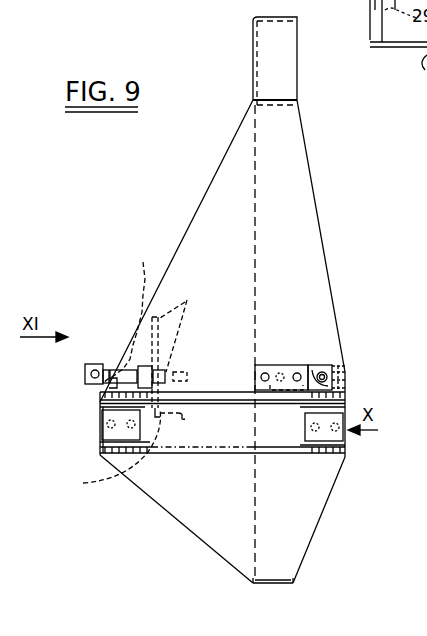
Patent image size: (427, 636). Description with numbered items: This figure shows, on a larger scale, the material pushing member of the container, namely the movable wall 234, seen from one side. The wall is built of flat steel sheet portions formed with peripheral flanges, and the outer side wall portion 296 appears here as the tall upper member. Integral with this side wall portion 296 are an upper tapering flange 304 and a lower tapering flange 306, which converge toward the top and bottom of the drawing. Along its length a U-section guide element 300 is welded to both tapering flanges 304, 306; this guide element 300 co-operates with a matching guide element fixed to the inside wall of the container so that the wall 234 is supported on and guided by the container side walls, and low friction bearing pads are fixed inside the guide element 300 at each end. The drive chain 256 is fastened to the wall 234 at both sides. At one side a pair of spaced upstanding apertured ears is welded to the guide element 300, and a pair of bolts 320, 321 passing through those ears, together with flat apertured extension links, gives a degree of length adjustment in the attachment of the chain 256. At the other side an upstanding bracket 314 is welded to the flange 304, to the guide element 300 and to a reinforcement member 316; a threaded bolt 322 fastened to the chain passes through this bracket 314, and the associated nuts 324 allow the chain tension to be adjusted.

The side wall portion 296 is at (253, 34).
The movable wall 234 is at (368, 190).
The upper tapering flange 304 is at (205, 200).
The lower tapering flange 306 is at (178, 507).
The guide element 300 is at (203, 392).
The threaded bolt 322 is at (127, 370).
The nut 324 is at (180, 345).
The upstanding bracket 314 is at (124, 312).
The reinforcement member 316 is at (118, 451).
The bolt 321 is at (298, 372).
The bolt 320 is at (322, 370).
The chain 256 is at (340, 358).